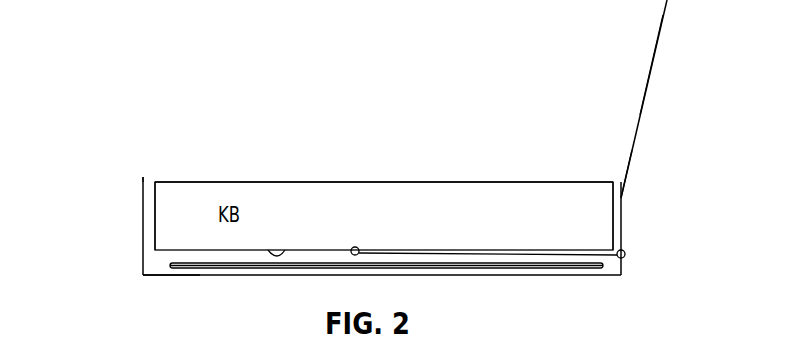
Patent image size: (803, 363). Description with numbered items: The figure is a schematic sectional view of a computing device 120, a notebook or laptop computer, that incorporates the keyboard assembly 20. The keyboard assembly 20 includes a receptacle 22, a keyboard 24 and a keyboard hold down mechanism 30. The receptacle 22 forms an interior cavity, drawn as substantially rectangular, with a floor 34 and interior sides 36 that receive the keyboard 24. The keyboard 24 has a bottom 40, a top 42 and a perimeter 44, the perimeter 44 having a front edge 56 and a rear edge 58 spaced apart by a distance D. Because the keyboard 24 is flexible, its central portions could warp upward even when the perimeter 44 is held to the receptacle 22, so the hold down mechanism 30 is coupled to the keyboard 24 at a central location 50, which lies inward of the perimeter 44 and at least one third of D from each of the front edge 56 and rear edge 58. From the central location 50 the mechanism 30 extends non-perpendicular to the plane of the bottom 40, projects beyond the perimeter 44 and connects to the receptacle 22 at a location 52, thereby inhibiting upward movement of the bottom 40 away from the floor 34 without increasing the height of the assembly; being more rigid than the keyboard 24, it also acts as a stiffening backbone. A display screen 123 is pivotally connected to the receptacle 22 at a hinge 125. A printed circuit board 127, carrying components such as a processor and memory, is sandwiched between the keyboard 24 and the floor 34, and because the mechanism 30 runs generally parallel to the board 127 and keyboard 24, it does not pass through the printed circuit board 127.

The keyboard assembly 20 is at (168, 177).
The receptacle 22 is at (629, 203).
The keyboard 24 is at (467, 182).
The keyboard hold down mechanism 30 is at (471, 262).
The floor 34 is at (148, 273).
The interior sides 36 is at (143, 240).
The bottom 40 is at (285, 248).
The top 42 is at (303, 182).
The perimeter 44 is at (151, 208).
The central location 50 is at (358, 247).
The location 52 is at (626, 254).
The front edge 56 is at (158, 223).
The rear edge 58 is at (613, 222).
The computing device 120 is at (96, 158).
The display screen 123 is at (648, 78).
The hinge 125 is at (627, 172).
The printed circuit board 127 is at (253, 268).